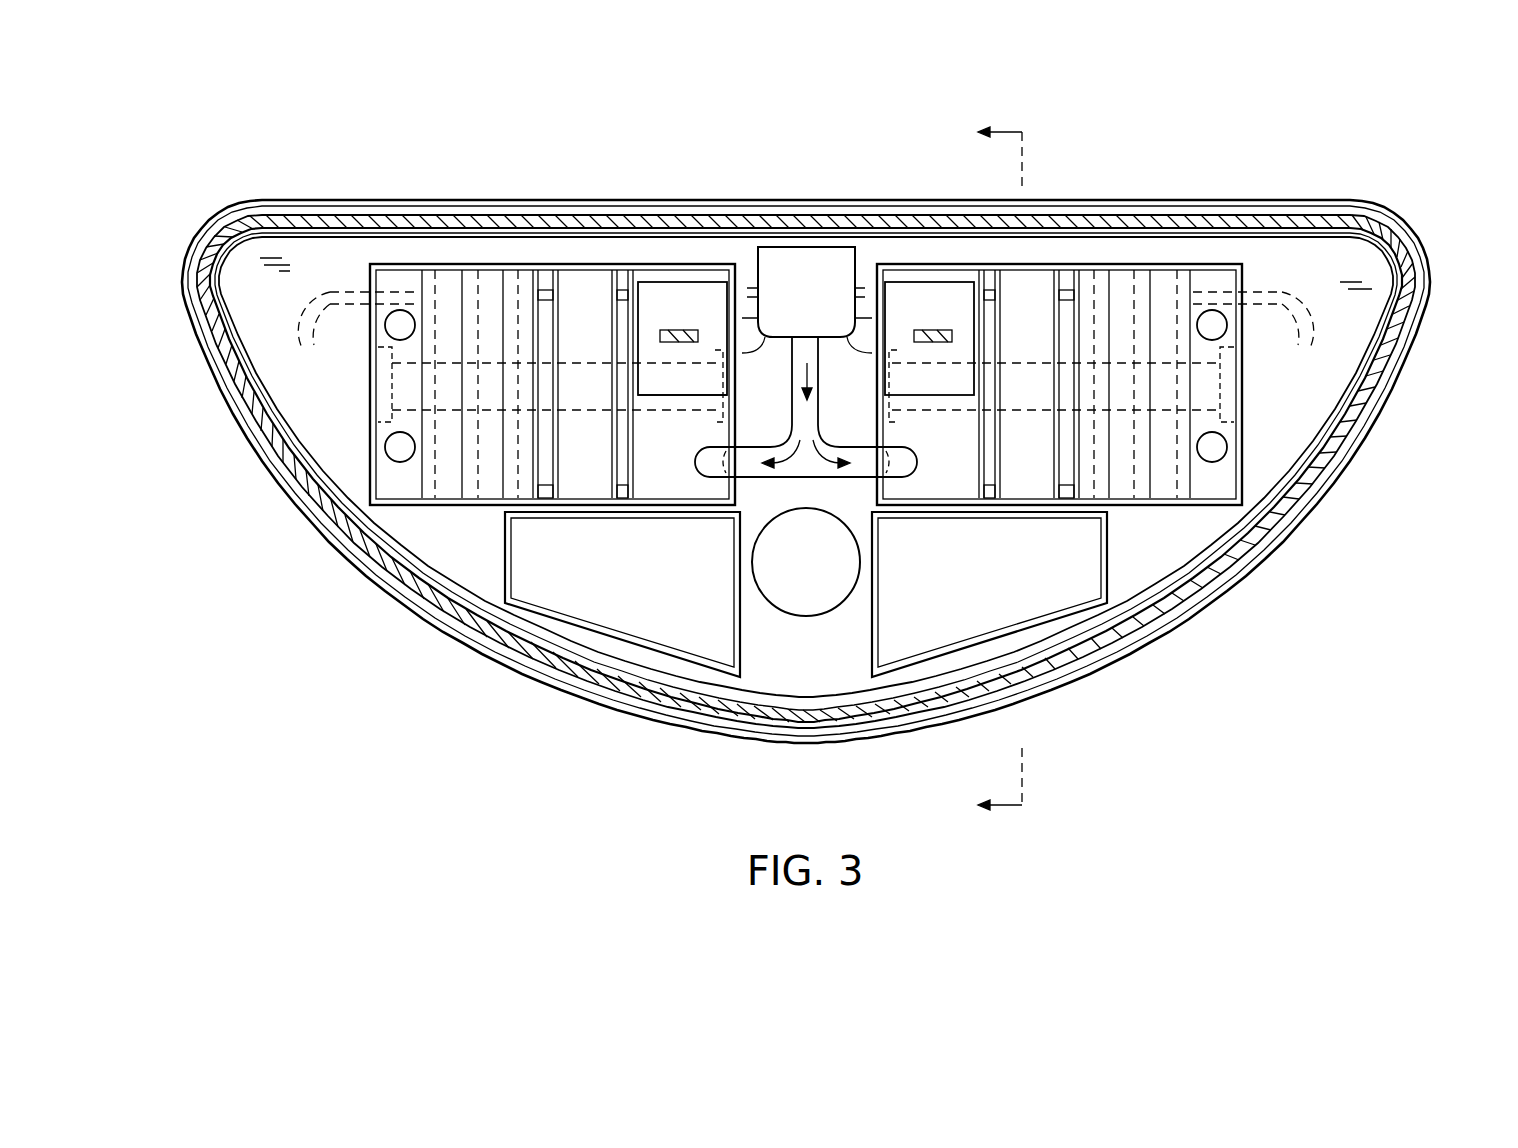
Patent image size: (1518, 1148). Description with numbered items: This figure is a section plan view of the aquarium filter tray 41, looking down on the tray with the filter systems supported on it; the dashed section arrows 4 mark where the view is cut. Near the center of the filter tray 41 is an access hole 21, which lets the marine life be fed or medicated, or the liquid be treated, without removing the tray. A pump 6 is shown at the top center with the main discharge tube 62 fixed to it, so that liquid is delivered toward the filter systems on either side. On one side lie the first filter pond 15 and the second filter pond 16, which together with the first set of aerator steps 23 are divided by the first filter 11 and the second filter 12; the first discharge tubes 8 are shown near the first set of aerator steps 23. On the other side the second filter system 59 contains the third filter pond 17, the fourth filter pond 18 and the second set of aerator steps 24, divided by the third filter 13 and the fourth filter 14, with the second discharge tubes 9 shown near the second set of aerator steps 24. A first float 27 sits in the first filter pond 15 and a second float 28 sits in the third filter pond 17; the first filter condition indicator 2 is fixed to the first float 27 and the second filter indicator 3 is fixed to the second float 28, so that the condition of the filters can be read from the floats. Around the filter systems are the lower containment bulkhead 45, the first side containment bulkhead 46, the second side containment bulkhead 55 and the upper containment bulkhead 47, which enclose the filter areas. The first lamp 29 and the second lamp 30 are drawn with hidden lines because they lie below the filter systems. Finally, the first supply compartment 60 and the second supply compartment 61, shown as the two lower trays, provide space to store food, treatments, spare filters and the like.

The first filter condition indicator 2 is at (1075, 285).
The second filter indicator 3 is at (693, 328).
The section line 4 is at (1012, 474).
The pump 6 is at (858, 255).
The first discharge tubes 8 is at (1225, 312).
The second discharge tubes 9 is at (398, 312).
The first filter 11 is at (1000, 320).
The second filter 12 is at (1078, 458).
The third filter 13 is at (556, 330).
The fourth filter 14 is at (600, 322).
The first filter pond 15 is at (924, 478).
The second filter pond 16 is at (1037, 462).
The third filter pond 17 is at (651, 462).
The fourth filter pond 18 is at (590, 455).
The access hole 21 is at (840, 612).
The first set of aerator steps 23 is at (1210, 430).
The second set of aerator steps 24 is at (418, 412).
The first float 27 is at (936, 330).
The second float 28 is at (690, 282).
The first lamp 29 is at (1018, 415).
The second lamp 30 is at (660, 410).
The aquarium filter tray 41 is at (1350, 262).
The lower containment bulkhead 45 is at (372, 353).
The first side containment bulkhead 46 is at (403, 297).
The upper containment bulkhead 47 is at (784, 336).
The second side containment bulkhead 55 is at (478, 472).
The second filter system 59 is at (452, 266).
The first supply compartment 60 is at (960, 602).
The second supply compartment 61 is at (713, 598).
The main discharge tube 62 is at (820, 417).